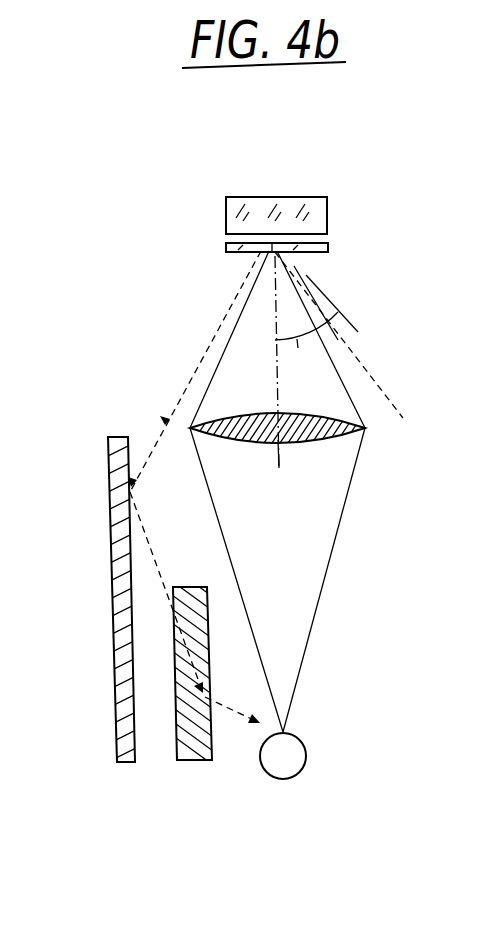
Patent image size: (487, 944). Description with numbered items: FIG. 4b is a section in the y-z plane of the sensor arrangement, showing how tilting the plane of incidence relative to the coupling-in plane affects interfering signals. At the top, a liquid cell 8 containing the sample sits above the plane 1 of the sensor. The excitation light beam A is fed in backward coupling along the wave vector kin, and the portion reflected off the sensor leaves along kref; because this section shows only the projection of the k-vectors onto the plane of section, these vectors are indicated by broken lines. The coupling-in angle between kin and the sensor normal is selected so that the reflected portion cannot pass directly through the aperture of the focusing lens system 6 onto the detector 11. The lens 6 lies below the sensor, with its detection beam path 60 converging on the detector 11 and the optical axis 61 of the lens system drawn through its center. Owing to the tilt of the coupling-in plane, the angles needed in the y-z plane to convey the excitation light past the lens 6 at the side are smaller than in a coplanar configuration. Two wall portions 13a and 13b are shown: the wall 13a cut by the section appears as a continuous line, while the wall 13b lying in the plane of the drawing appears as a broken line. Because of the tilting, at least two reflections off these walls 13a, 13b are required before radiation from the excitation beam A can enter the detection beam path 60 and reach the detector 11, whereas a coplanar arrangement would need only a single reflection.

The liquid cell 8 is at (329, 219).
The plane of the sensor 1 is at (329, 247).
The focusing lens system 6 is at (345, 442).
The detection beam path 60 is at (342, 403).
The optical axis 61 is at (283, 452).
The wall portion 13a is at (112, 600).
The wall portion 13b is at (173, 708).
The detector 11 is at (290, 758).
The excitation radiation A is at (352, 316).
The wave vector of the excitation light kin is at (385, 393).
The wave vector of the reflected light kref is at (234, 305).